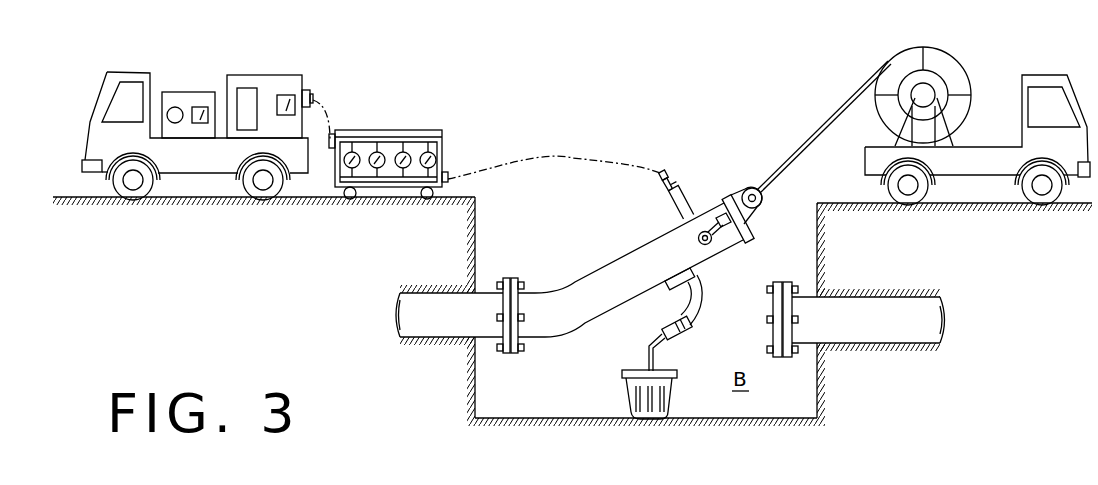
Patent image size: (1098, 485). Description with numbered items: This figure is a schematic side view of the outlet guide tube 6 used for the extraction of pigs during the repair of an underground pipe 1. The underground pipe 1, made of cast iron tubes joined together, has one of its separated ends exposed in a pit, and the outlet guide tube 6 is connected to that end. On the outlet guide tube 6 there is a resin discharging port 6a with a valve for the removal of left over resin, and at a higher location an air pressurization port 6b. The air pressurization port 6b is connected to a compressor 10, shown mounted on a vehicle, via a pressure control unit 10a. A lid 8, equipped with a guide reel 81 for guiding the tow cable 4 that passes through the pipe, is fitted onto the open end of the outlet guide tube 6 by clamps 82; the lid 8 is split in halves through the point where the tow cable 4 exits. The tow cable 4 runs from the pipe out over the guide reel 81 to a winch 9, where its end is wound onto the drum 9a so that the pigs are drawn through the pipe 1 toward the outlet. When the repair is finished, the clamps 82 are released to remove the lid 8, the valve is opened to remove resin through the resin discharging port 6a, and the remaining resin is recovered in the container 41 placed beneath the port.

The underground pipe 1 is at (437, 300).
The tow cable 4 is at (821, 128).
The outlet guide tube 6 is at (600, 268).
The resin discharging port 6a is at (670, 290).
The air pressurization port 6b is at (688, 223).
The lid 8 is at (746, 225).
The guide reel 81 is at (760, 190).
The clamps 82 is at (711, 247).
The winch 9 is at (920, 121).
The drum 9a is at (896, 62).
The compressor 10 is at (288, 75).
The pressure control unit 10a is at (405, 130).
The container 41 is at (625, 397).